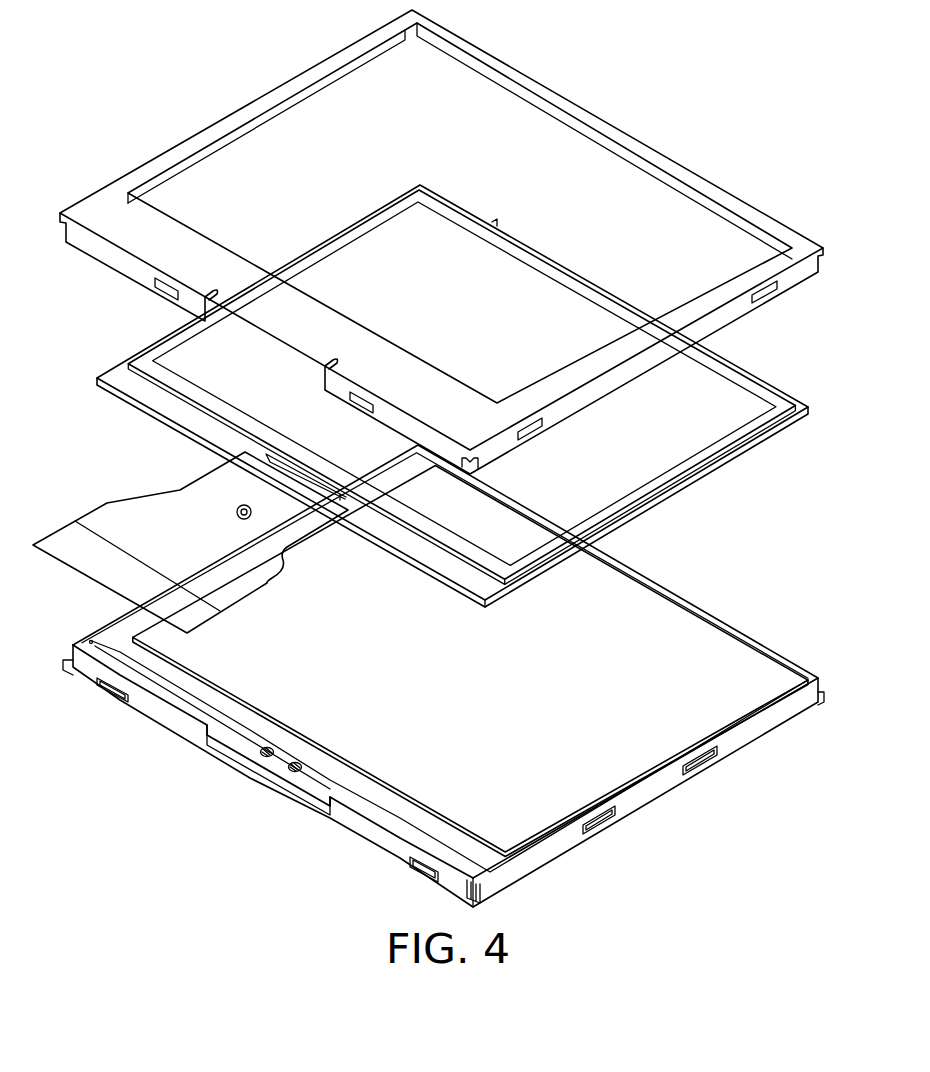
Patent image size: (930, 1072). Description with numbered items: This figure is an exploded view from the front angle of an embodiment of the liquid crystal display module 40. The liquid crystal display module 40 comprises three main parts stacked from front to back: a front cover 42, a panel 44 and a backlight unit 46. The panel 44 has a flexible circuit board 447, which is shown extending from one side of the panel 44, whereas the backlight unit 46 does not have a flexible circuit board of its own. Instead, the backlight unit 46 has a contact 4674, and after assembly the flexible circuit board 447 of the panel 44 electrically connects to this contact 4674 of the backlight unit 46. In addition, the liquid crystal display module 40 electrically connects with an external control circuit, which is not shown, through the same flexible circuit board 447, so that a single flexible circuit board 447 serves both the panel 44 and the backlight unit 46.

The liquid crystal display module 40 is at (190, 33).
The front cover 42 is at (806, 242).
The panel 44 is at (796, 410).
The flexible circuit board 447 is at (247, 572).
The backlight unit 46 is at (647, 795).
The contact 4674 is at (293, 770).